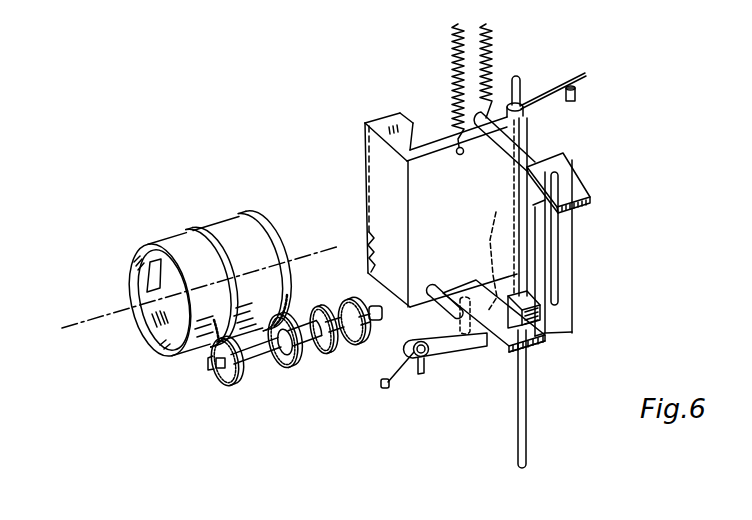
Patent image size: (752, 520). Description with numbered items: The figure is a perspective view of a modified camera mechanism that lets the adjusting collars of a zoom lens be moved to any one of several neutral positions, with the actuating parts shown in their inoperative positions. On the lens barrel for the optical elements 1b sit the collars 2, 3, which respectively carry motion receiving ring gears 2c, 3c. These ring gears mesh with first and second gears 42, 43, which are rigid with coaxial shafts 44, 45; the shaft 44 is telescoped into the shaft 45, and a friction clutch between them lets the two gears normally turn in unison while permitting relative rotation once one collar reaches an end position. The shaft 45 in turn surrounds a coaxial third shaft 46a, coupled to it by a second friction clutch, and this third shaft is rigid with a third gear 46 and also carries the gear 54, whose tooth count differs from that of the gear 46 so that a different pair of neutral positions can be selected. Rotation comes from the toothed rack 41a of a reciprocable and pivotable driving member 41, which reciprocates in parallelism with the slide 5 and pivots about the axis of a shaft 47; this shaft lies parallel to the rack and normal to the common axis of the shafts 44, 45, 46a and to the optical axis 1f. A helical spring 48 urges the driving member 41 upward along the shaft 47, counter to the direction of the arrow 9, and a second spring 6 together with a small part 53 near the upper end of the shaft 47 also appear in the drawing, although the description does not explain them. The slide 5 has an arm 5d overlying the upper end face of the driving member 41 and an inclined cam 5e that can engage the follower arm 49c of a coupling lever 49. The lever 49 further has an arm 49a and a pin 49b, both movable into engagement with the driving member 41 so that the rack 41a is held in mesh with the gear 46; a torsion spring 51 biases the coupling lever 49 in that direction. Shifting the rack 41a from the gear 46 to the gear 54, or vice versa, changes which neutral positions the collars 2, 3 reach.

The optical elements 1b is at (150, 318).
The optical axis 1f is at (201, 287).
The collar 2 is at (166, 278).
The motion receiving ring gear 2c is at (205, 262).
The collar 3 is at (228, 259).
The motion receiving ring gear 3c is at (265, 255).
The driving member 41 is at (423, 209).
The toothed rack 41a is at (347, 231).
The first gear 42 is at (217, 386).
The second gear 43 is at (300, 321).
The shaft 44 is at (256, 383).
The shaft 45 is at (304, 365).
The third gear 46 is at (326, 359).
The third shaft 46a is at (392, 345).
The shaft 47 is at (555, 72).
The helical spring 48 is at (438, 88).
The coupling lever 49 is at (494, 293).
The arm 49a is at (450, 278).
The pin 49b is at (493, 215).
The follower arm 49c is at (548, 378).
The slide 5 is at (571, 248).
The arm 5d is at (504, 112).
The cam 5e is at (574, 271).
The torsion spring 51 is at (445, 374).
The knob 53 is at (581, 110).
The gear 54 is at (353, 376).
The spring 6 is at (507, 67).
The arrow 9 is at (576, 176).